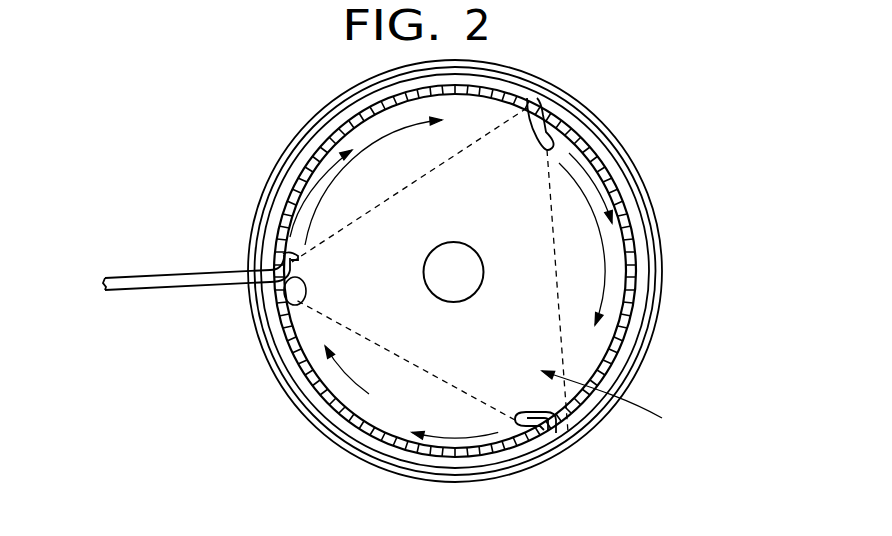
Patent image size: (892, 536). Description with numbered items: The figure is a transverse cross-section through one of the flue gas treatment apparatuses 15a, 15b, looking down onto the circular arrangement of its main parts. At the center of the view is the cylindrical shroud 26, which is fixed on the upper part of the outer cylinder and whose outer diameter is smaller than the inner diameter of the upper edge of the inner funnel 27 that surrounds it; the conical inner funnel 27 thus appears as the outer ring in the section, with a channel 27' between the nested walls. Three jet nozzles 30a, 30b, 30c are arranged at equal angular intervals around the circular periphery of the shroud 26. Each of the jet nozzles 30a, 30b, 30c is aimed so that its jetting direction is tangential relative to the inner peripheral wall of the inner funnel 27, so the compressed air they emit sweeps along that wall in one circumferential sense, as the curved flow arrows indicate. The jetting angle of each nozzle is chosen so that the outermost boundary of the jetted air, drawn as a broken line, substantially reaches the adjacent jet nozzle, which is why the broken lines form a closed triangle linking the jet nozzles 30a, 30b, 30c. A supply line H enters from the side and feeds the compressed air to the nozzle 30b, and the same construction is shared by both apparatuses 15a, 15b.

The flue gas treatment apparatus 15a is at (657, 152).
The flue gas treatment apparatus 15b is at (657, 152).
The cylindrical shroud 26 is at (634, 260).
The inner funnel 27 is at (485, 271).
The channel 27' is at (615, 404).
The jet nozzle 30a is at (555, 115).
The jet nozzle 30b is at (284, 302).
The jet nozzle 30c is at (534, 437).
The hose H is at (150, 289).